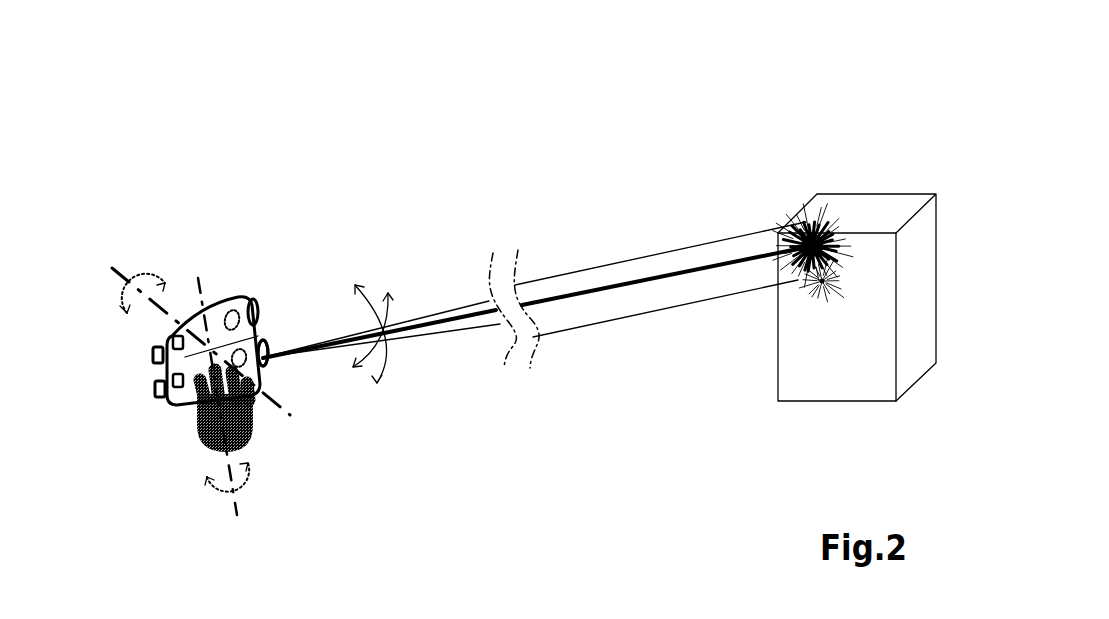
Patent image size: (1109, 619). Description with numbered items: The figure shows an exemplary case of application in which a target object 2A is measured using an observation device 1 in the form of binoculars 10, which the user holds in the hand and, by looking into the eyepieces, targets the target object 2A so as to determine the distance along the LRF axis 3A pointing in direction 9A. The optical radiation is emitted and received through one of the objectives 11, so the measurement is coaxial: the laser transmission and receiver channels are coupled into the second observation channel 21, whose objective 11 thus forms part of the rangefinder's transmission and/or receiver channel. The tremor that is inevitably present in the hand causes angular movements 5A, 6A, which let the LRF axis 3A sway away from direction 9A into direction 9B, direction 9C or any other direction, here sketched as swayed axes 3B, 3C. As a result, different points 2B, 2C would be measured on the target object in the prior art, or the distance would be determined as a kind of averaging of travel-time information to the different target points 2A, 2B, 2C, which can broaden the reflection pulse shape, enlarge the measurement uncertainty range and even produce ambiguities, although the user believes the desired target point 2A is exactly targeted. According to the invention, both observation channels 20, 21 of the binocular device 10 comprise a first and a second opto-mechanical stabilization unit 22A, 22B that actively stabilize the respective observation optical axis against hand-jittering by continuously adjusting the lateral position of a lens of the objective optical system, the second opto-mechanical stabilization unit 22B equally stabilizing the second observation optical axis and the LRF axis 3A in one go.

The observation device 1 is at (143, 235).
The hand-held device 10 is at (255, 298).
The objective 11 is at (268, 360).
The first observation channel 20 is at (183, 357).
The second observation channel 21 is at (185, 397).
The first opto-mechanical stabilization unit 22A is at (232, 317).
The second opto-mechanical stabilization unit 22B is at (243, 380).
The LRF axis 3A is at (537, 264).
The direction 9A is at (663, 277).
The upper marginal beam 3B is at (535, 235).
The direction 9B is at (606, 262).
The lower marginal beam 3C is at (531, 351).
The direction 9C is at (620, 318).
The angular movement 5A is at (385, 347).
The angular movement 6A is at (393, 325).
The target object 2A is at (842, 232).
The point 2B is at (800, 230).
The point 2C is at (822, 281).